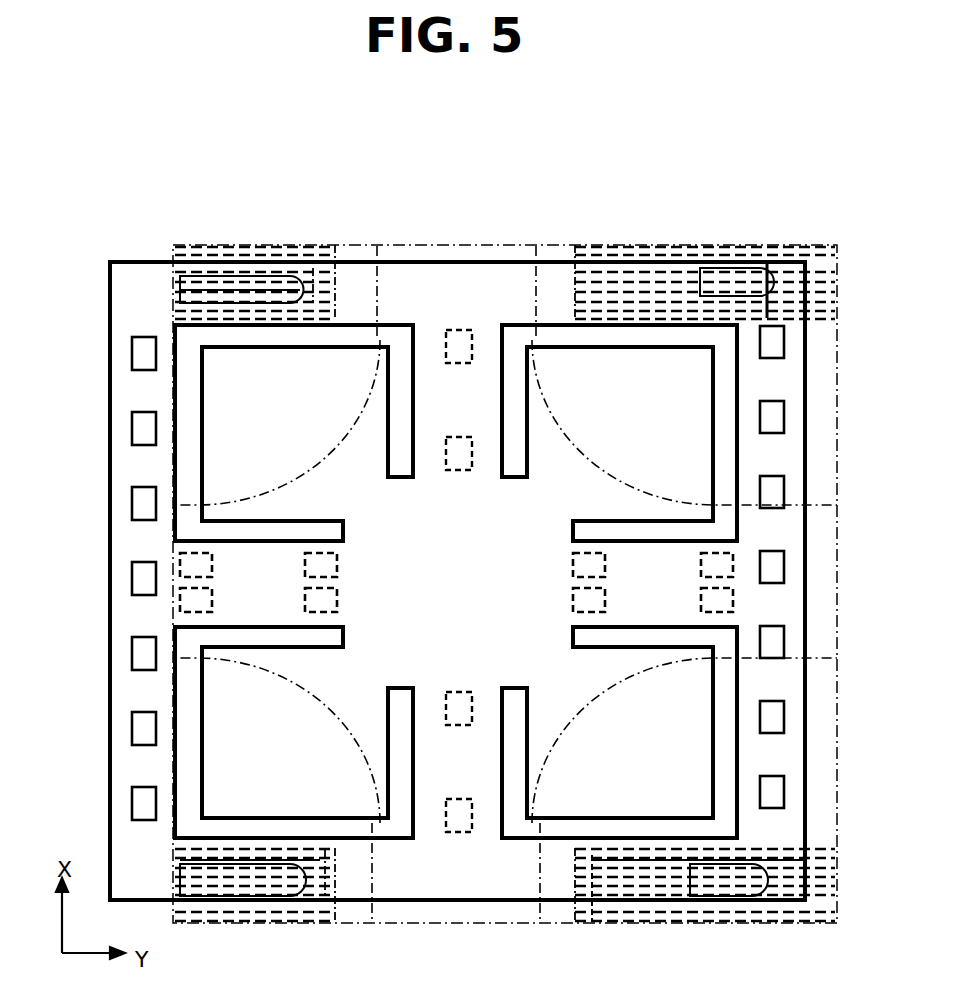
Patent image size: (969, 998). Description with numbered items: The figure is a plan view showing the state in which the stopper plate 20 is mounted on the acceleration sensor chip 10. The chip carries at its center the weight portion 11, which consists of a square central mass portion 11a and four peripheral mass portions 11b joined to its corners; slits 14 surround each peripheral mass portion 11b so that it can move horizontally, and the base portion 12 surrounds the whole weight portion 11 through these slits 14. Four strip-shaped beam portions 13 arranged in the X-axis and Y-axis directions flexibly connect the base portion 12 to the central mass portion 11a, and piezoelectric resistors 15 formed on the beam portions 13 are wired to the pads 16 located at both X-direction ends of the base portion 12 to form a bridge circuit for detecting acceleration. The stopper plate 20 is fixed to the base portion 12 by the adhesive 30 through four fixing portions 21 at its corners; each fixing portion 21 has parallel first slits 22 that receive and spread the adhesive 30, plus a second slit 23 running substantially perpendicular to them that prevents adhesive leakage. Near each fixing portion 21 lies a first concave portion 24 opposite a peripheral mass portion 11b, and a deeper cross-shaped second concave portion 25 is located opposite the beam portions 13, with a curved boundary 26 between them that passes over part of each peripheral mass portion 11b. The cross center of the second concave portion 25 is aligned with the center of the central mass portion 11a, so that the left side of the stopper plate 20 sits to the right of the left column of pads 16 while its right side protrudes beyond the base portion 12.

The acceleration sensor chip 10 is at (555, 290).
The weight portion 11 is at (466, 580).
The central mass portion 11a is at (530, 568).
The peripheral mass portion 11b is at (660, 415).
The base portion 12 is at (772, 460).
The beam portion 13 is at (643, 567).
The slit 14 is at (727, 693).
The piezoelectric resistor 15 is at (175, 600).
The pad 16 is at (138, 727).
The stopper plate 20 is at (497, 246).
The fixing portion 21 is at (145, 368).
The first slit 22 is at (175, 278).
The second slit 23 is at (314, 275).
The first concave portion 24 is at (270, 458).
The second concave portion 25 is at (450, 300).
The boundary 26 is at (384, 320).
The adhesive 30 is at (175, 298).